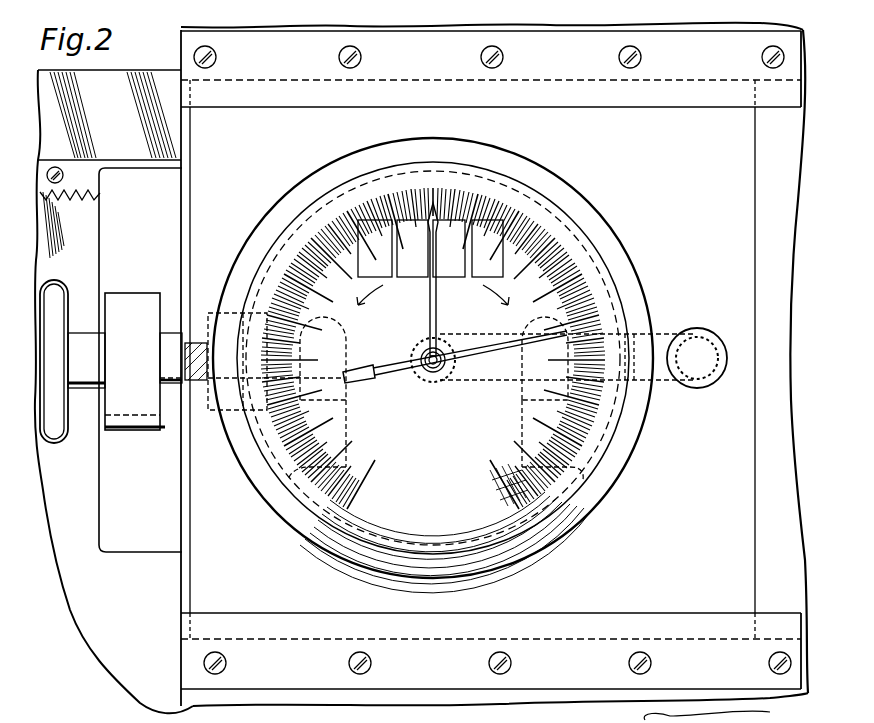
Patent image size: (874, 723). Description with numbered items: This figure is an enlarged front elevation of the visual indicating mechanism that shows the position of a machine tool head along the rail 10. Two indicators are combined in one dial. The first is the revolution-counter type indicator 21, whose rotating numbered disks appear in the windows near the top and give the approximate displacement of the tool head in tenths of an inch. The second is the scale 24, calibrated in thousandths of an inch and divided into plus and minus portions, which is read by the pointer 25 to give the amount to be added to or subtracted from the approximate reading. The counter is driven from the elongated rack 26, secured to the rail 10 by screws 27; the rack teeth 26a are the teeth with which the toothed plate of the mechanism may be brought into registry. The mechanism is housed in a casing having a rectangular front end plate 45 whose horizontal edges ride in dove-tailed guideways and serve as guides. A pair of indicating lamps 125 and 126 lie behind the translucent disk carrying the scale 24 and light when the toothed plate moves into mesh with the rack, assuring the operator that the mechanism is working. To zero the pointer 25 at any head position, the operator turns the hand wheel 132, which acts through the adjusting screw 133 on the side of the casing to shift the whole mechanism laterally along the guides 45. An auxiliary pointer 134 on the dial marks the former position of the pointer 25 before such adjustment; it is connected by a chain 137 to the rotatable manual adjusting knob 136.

The rail 10 is at (146, 75).
The visual indicator 21 is at (453, 290).
The scale 24 is at (337, 221).
The pointer 25 is at (460, 352).
The elongated rack 26 is at (70, 166).
The rack teeth 26a is at (80, 200).
The screws 27 is at (63, 177).
The rectangular front end plate 45 is at (745, 158).
The indicating lamp 125 is at (346, 340).
The indicating lamp 126 is at (530, 333).
The hand wheel 132 is at (54, 440).
The adjusting screw 133 is at (182, 333).
The auxiliary pointer 134 is at (430, 319).
The manual adjusting knob 136 is at (716, 342).
The chain 137 is at (667, 336).